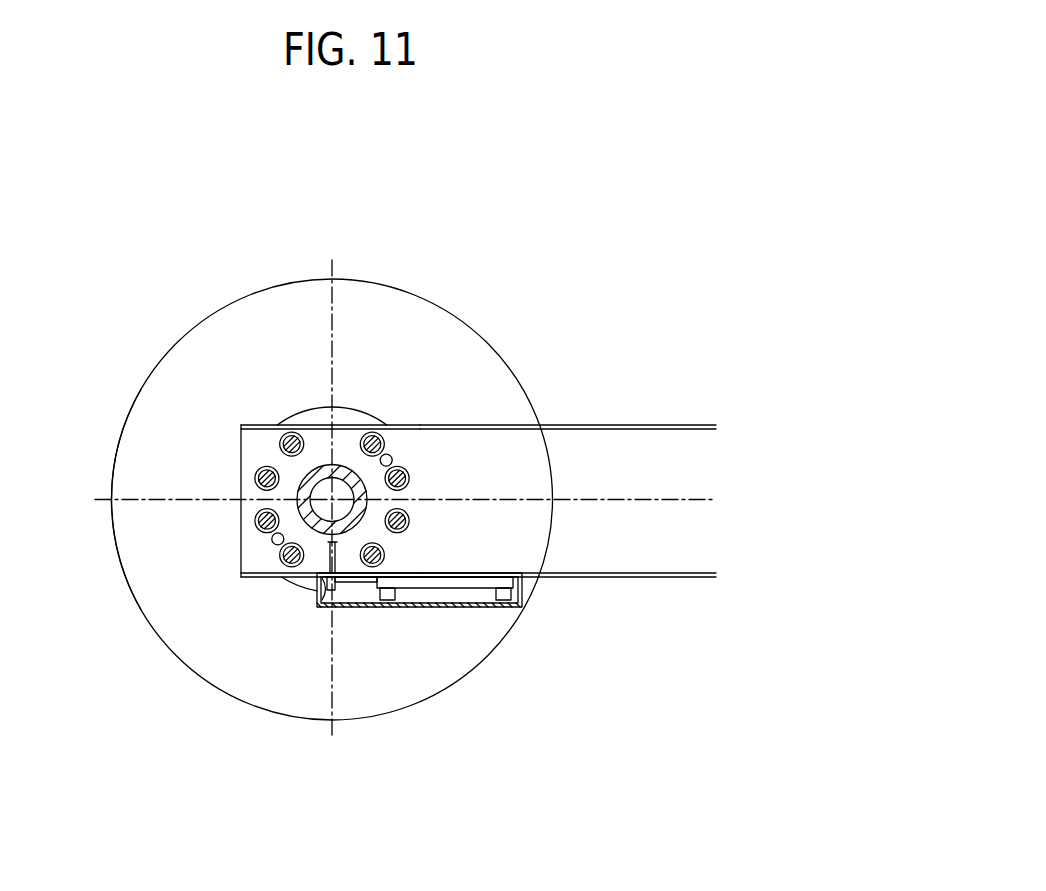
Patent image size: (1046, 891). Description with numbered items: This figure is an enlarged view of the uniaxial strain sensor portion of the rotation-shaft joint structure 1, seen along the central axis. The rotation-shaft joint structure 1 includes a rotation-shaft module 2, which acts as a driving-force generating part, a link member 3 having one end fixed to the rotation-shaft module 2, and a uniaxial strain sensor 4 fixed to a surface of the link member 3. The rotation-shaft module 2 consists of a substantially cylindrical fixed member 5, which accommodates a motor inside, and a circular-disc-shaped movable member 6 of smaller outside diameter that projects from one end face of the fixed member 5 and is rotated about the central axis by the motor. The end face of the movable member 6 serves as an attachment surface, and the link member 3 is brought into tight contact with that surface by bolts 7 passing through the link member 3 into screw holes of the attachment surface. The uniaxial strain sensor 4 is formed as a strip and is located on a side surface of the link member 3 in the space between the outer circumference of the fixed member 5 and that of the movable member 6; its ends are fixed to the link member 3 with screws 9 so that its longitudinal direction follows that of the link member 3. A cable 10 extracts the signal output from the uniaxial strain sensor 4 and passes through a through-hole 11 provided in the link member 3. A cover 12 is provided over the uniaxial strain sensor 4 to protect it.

The rotation-shaft joint structure 1 is at (612, 270).
The rotation-shaft module 2 is at (160, 332).
The link member 3 is at (632, 425).
The uniaxial strain sensor 4 is at (447, 601).
The fixed member 5 is at (128, 592).
The movable member 6 is at (315, 407).
The bolts 7 is at (276, 424).
The screws 9 is at (383, 600).
The cable 10 is at (353, 600).
The through-hole 11 is at (327, 608).
The cover 12 is at (417, 607).